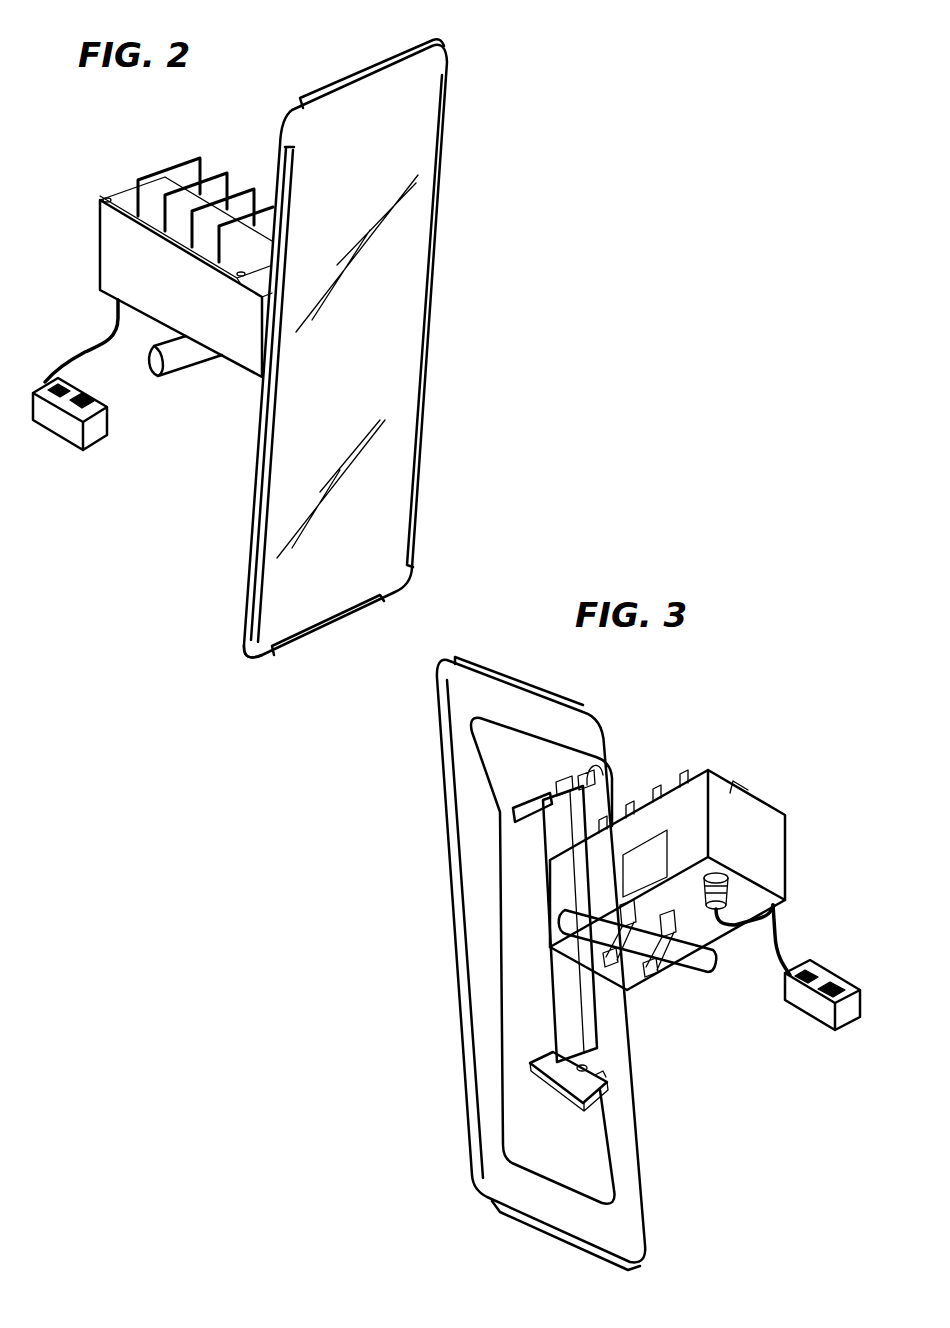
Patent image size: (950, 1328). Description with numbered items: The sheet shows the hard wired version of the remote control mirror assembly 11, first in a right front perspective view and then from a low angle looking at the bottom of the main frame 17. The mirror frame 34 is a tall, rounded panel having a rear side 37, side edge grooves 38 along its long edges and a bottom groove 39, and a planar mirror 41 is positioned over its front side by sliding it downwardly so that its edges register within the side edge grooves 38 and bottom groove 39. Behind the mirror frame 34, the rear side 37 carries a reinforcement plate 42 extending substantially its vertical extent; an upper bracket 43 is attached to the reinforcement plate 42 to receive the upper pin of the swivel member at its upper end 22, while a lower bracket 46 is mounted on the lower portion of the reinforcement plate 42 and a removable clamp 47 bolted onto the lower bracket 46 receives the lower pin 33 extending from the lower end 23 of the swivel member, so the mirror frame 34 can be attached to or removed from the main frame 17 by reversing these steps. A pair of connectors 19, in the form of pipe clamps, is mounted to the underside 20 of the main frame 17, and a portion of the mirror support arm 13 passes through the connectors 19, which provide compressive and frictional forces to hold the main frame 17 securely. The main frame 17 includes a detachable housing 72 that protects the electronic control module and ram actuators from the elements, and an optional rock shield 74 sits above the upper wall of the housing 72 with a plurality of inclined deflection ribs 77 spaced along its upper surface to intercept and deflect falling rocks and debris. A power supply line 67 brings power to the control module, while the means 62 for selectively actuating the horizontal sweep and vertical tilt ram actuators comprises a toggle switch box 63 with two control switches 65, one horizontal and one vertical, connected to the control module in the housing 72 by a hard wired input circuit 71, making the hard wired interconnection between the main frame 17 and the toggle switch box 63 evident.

In FIG. 2, the remote control mirror assembly 11 is at (492, 195).
In FIG. 3, the remote control mirror assembly 11 is at (395, 975).
In FIG. 2, the mirror support arm 13 is at (190, 385).
In FIG. 3, the mirror support arm 13 is at (700, 980).
In FIG. 3, the main frame 17 is at (735, 955).
In FIG. 3, the connectors 19 is at (660, 972).
In FIG. 3, the underside 20 is at (750, 897).
In FIG. 3, the upper end 22 is at (548, 832).
In FIG. 3, the lower end 23 is at (555, 1033).
In FIG. 3, the lower pin 33 is at (572, 1100).
In FIG. 2, the mirror frame 34 is at (452, 412).
In FIG. 3, the mirror frame 34 is at (668, 1146).
In FIG. 3, the rear side 37 is at (478, 695).
In FIG. 2, the side edge grooves 38 is at (437, 285).
In FIG. 3, the side edge grooves 38 is at (455, 910).
In FIG. 2, the bottom groove 39 is at (337, 638).
In FIG. 3, the bottom groove 39 is at (545, 1245).
In FIG. 2, the planar mirror 41 is at (452, 47).
In FIG. 3, the reinforcement plate 42 is at (530, 760).
In FIG. 3, the upper bracket 43 is at (585, 765).
In FIG. 3, the lower bracket 46 is at (553, 1085).
In FIG. 3, the removable clamp 47 is at (600, 1087).
In FIG. 2, the means for selectively actuating 62 is at (70, 462).
In FIG. 3, the means for selectively actuating 62 is at (818, 1092).
In FIG. 2, the toggle switch box 63 is at (48, 435).
In FIG. 3, the toggle switch box 63 is at (857, 1028).
In FIG. 2, the control switches 65 is at (65, 386).
In FIG. 3, the control switches 65 is at (800, 982).
In FIG. 3, the power supply line 67 is at (773, 913).
In FIG. 2, the hard wired input circuit 71 is at (92, 343).
In FIG. 3, the hard wired input circuit 71 is at (778, 940).
In FIG. 2, the detachable housing 72 is at (118, 247).
In FIG. 3, the detachable housing 72 is at (694, 802).
In FIG. 2, the rock shield 74 is at (117, 188).
In FIG. 2, the inclined deflection ribs 77 is at (220, 170).